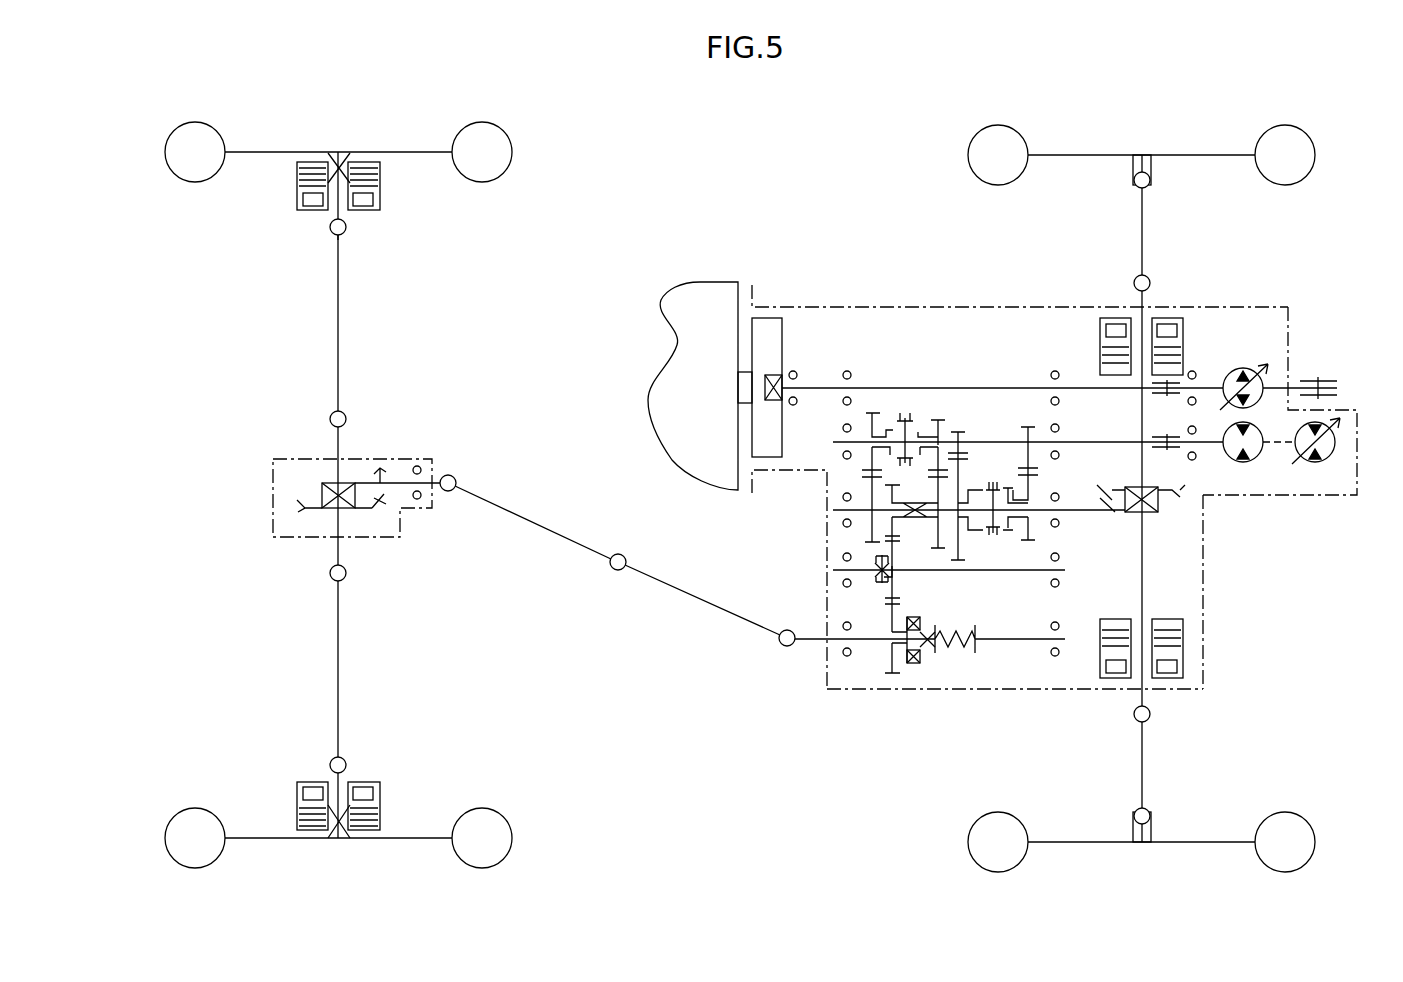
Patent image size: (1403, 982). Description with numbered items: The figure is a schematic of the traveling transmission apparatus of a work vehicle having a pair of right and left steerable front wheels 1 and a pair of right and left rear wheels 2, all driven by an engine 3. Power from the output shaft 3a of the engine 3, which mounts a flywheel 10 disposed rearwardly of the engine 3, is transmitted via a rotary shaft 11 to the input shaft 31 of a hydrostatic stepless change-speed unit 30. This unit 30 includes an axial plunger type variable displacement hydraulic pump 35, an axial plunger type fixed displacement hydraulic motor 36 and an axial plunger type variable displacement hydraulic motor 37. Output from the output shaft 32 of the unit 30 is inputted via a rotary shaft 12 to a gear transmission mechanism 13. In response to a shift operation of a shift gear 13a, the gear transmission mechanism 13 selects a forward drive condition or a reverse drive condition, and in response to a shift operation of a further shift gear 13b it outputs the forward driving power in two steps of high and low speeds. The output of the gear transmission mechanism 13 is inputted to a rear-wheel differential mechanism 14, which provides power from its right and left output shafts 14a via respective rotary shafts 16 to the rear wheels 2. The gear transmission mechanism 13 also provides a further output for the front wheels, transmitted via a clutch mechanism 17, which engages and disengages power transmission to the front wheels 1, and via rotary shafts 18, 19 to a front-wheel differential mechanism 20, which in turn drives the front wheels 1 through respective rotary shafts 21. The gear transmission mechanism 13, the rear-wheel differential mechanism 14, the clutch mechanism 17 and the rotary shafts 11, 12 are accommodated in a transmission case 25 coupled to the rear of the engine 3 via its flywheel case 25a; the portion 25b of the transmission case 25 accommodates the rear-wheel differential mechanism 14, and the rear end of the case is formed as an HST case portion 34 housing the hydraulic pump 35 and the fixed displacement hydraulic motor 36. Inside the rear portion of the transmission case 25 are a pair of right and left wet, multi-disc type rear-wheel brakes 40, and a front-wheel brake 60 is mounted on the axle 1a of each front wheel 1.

The front wheels 1 is at (500, 158).
The axle 1a is at (341, 208).
The rear wheels 2 is at (968, 160).
The engine 3 is at (693, 300).
The output shaft 3a is at (747, 388).
The flywheel 10 is at (773, 356).
The rotary shaft 11 is at (948, 388).
The rotary shaft 12 is at (1067, 443).
The gear transmission mechanism 13 is at (950, 459).
The shift gear 13a is at (998, 463).
The shift gear 13b is at (905, 410).
The rear-wheel differential mechanism 14 is at (1173, 519).
The output shafts 14a is at (1142, 470).
The rotary shafts 16 is at (1142, 237).
The clutch mechanism 17 is at (858, 596).
The rotary shaft 18 is at (692, 600).
The rotary shaft 19 is at (526, 520).
The front-wheel differential mechanism 20 is at (390, 514).
The rotary shafts 21 is at (338, 345).
The transmission case 25 is at (1015, 305).
The flywheel case 25a is at (791, 470).
The portion of the transmission case 25b is at (1313, 497).
The hydrostatic stepless change-speed unit 30 is at (1265, 307).
The input shaft 31 is at (1208, 382).
The output shaft 32 is at (1205, 443).
The HST case portion 34 is at (1083, 645).
The variable displacement hydraulic pump 35 is at (1258, 372).
The fixed displacement hydraulic motor 36 is at (1257, 460).
The variable displacement hydraulic motor 37 is at (1332, 462).
The rear-wheel brakes 40 is at (1100, 352).
The front-wheel brake 60 is at (380, 178).